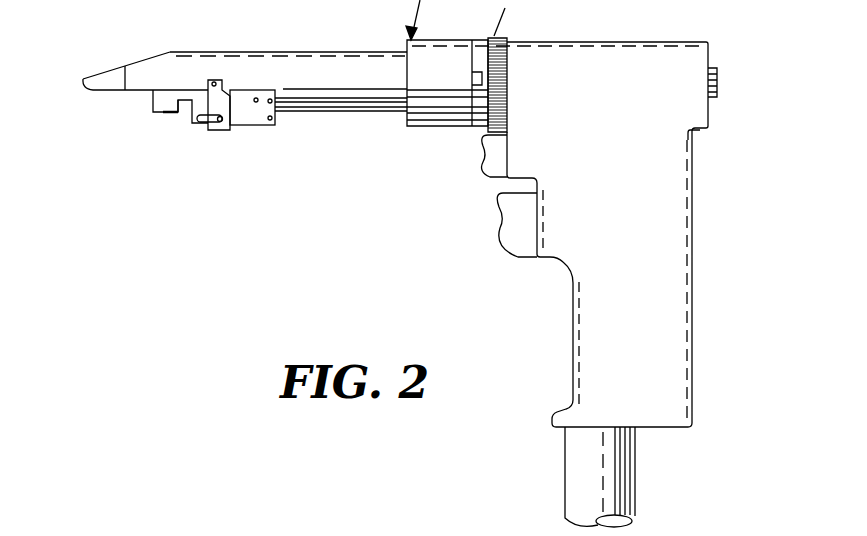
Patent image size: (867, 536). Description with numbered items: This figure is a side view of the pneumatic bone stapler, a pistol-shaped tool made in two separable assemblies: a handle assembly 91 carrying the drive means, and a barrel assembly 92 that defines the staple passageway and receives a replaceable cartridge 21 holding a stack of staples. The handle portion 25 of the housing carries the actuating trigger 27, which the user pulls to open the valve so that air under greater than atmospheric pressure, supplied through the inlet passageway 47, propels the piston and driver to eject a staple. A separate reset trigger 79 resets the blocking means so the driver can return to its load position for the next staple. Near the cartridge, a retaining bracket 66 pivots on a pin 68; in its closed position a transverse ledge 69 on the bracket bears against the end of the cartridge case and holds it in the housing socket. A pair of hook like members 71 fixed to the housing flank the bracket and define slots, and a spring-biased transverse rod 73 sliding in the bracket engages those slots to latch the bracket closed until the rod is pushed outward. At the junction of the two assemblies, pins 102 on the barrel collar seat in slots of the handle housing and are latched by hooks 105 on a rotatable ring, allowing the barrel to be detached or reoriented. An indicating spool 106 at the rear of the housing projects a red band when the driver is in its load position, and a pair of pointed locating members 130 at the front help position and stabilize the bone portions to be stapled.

The replaceable cartridge 21 is at (158, 113).
The handle portion 25 is at (683, 290).
The actuating trigger 27 is at (518, 218).
The inlet passageway 47 is at (630, 483).
The retaining bracket 66 is at (267, 127).
The pin 68 is at (284, 91).
The transverse ledge 69 is at (182, 113).
The hook like members 71 is at (233, 96).
The transverse rod 73 is at (220, 122).
The reset trigger 79 is at (490, 160).
The handle assembly 91 is at (692, 188).
The barrel assembly 92 is at (347, 57).
The pins 102 is at (497, 70).
The hooks 105 is at (474, 79).
The indicating spool 106 is at (718, 68).
The pointed locating members 130 is at (83, 77).